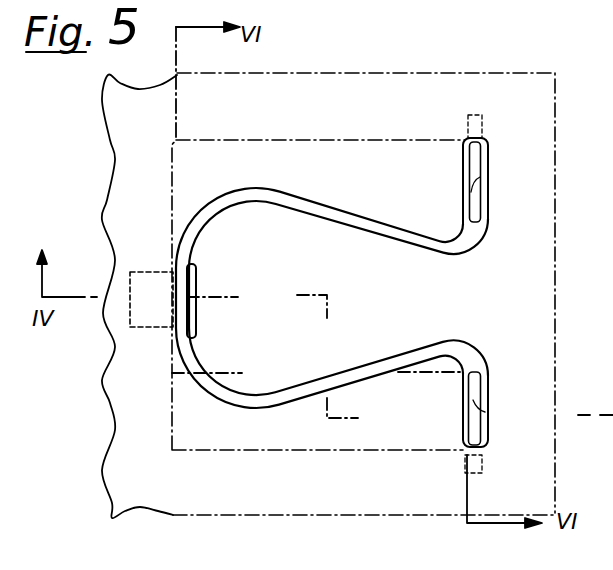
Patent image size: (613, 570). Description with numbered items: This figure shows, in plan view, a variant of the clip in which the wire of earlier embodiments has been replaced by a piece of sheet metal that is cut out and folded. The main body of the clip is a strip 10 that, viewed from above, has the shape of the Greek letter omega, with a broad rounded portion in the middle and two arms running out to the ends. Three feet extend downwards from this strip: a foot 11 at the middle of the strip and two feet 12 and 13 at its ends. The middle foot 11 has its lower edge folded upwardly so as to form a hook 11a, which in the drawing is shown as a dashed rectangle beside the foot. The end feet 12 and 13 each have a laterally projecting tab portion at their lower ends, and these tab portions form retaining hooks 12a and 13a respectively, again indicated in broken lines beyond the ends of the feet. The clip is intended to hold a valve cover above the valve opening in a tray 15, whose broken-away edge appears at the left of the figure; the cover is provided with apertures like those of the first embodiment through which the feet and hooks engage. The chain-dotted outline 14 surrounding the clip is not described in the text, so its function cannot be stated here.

The strip 10 is at (380, 227).
The foot 11 is at (178, 345).
The hook 11a is at (150, 272).
The foot 12 is at (487, 176).
The retaining hook 12a is at (481, 124).
The foot 13 is at (492, 413).
The retaining hook 13a is at (488, 458).
The mounting plate outline 14 is at (397, 117).
The tray 15 is at (197, 127).